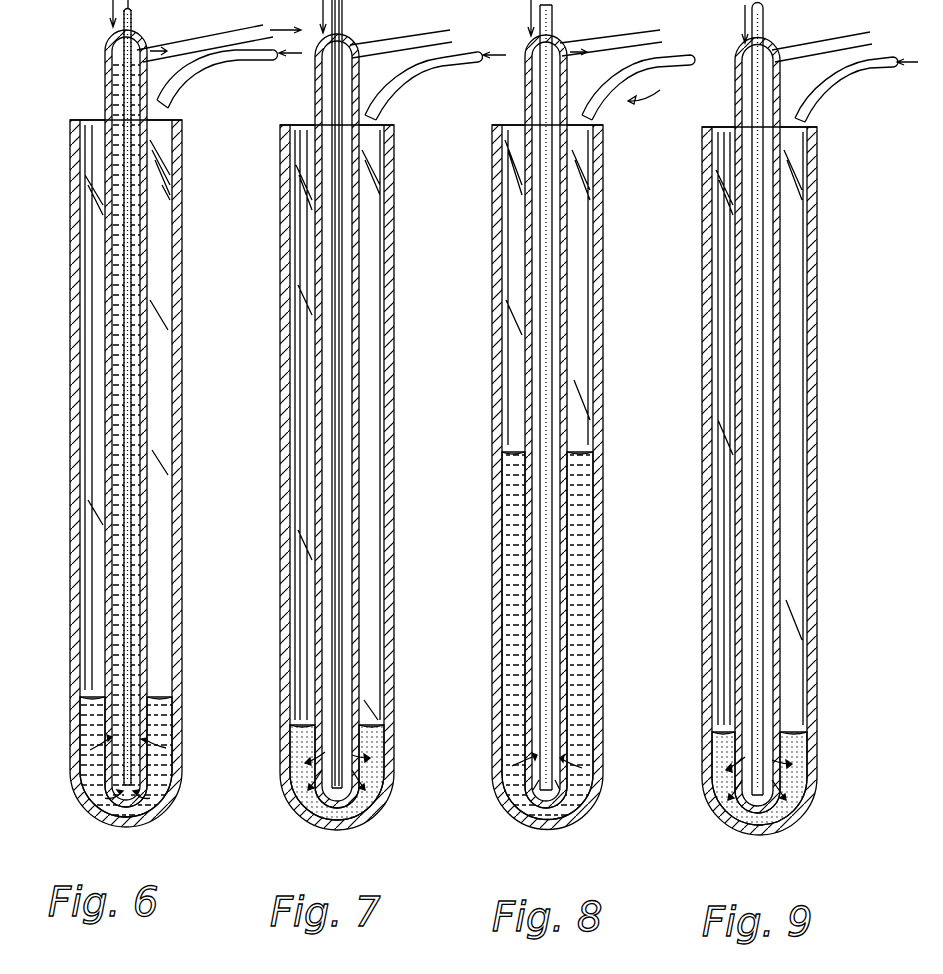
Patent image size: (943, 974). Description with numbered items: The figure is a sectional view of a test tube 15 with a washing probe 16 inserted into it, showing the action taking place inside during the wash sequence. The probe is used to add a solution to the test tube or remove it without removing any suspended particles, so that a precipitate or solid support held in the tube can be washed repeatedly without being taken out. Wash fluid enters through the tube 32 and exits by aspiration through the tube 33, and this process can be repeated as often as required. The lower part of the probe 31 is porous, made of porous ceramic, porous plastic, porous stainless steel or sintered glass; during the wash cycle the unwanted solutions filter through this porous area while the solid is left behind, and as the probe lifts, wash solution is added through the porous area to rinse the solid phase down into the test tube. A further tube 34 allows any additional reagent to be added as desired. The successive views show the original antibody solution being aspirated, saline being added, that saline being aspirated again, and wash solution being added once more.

In FIG. 6, the outer tube 15 is at (75, 390).
In FIG. 7, the outer tube 15 is at (283, 393).
In FIG. 8, the outer tube 15 is at (495, 393).
In FIG. 9, the outer tube 15 is at (703, 396).
In FIG. 6, the inner tube 16 is at (100, 72).
In FIG. 6, the porous lower part of the probe 31 is at (112, 746).
In FIG. 7, the porous lower part of the probe 31 is at (345, 805).
In FIG. 8, the porous lower part of the probe 31 is at (588, 805).
In FIG. 9, the porous lower part of the probe 31 is at (775, 812).
In FIG. 6, the entrance tube 32 is at (133, 14).
In FIG. 8, the entrance tube 32 is at (555, 31).
In FIG. 6, the exit tube 33 is at (208, 46).
In FIG. 8, the exit tube 33 is at (651, 42).
In FIG. 6, the reagent addition tube 34 is at (212, 75).
In FIG. 8, the reagent addition tube 34 is at (674, 72).